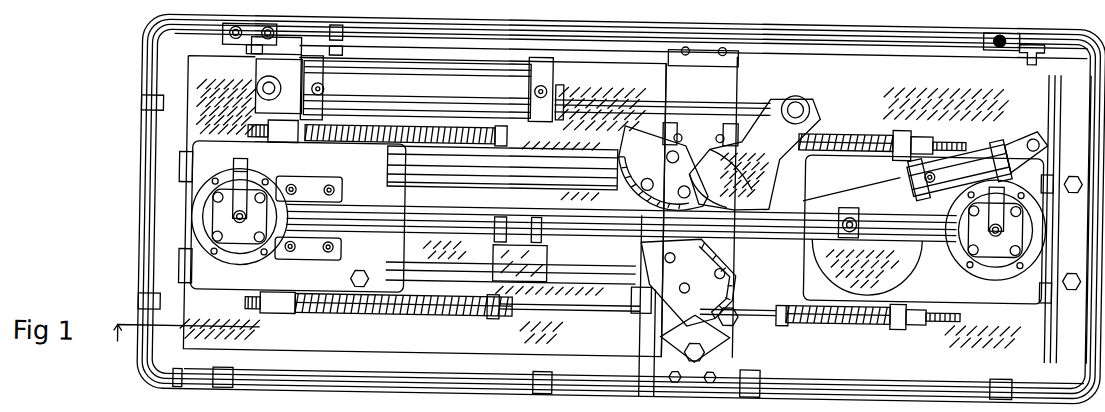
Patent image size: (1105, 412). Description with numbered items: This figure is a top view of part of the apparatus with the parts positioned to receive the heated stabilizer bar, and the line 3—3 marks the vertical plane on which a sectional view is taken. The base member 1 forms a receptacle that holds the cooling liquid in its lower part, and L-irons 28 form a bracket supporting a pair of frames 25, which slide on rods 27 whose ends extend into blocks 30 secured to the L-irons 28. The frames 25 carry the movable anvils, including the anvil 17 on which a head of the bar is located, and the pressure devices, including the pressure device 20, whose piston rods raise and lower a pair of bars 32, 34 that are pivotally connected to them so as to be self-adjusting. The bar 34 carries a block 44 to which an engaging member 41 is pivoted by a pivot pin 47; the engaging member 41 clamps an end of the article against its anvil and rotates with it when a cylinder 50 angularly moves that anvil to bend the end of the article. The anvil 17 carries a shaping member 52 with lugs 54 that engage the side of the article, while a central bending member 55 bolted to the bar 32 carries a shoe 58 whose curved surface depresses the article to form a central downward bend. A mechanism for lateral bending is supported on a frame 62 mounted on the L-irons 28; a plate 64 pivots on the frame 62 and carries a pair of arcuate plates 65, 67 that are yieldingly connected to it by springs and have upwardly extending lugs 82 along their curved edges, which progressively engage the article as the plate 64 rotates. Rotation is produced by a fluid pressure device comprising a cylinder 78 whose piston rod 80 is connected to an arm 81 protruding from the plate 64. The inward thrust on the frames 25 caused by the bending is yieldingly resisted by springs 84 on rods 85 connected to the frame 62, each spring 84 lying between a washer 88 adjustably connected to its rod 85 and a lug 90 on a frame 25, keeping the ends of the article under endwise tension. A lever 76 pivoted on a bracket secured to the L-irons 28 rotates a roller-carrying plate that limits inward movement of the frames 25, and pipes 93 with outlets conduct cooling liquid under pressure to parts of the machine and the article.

The base member 1 is at (148, 108).
The section line 3— 3 is at (186, 348).
The anvil 17 is at (320, 186).
The pressure device 20 is at (205, 212).
The frame 25 is at (220, 163).
The rod 27 is at (1058, 155).
The L-iron 28 is at (176, 81).
The block 30 is at (172, 239).
The bar 32 is at (318, 240).
The bar 34 is at (353, 204).
The engaging member 41 is at (893, 262).
The block 44 is at (820, 224).
The pivot pin 47 is at (853, 206).
The cylinder 50 is at (985, 137).
The shaping member 52 is at (440, 233).
The lug 54 is at (518, 240).
The central bending member 55 is at (540, 230).
The shoe 58 is at (578, 256).
The frame 62 is at (660, 325).
The plate 64 is at (645, 285).
The arcuate plate 65 is at (680, 172).
The arcuate plate 67 is at (746, 300).
The lever 76 is at (650, 383).
The cylinder 78 is at (424, 92).
The piston rod 80 is at (583, 95).
The arm 81 is at (803, 118).
The lug 82 is at (677, 226).
The spring 84 is at (847, 126).
The rod 85 is at (868, 126).
The washer 88 is at (500, 312).
The lug 90 is at (935, 123).
The pipe 93 is at (160, 272).